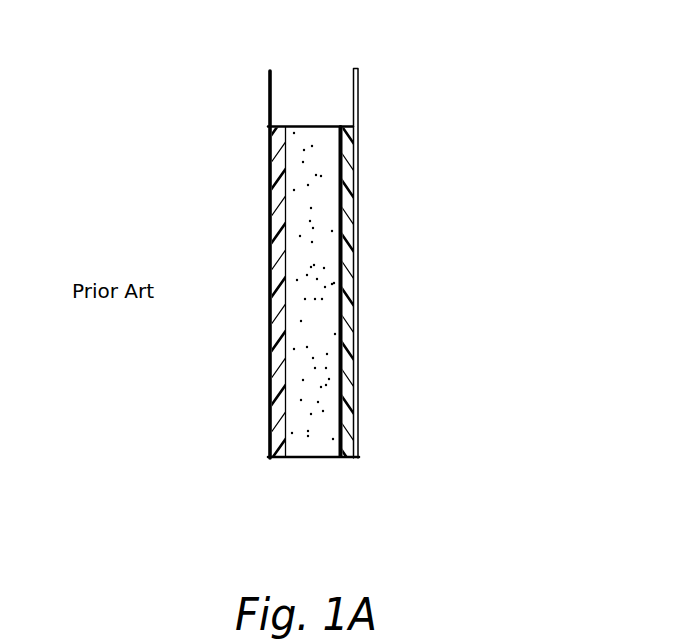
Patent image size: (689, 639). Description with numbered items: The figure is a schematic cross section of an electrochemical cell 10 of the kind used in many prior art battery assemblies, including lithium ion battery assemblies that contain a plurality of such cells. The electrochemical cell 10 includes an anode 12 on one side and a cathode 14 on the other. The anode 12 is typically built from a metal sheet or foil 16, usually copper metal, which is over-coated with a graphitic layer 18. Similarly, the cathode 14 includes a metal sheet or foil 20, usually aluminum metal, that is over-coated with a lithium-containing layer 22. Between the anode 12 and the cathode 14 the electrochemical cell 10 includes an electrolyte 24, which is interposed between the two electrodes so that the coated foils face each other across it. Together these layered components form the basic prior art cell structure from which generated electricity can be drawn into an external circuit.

The electrochemical cell 10 is at (440, 135).
The anode 12 is at (277, 342).
The cathode 14 is at (345, 308).
The metal sheet or foil 16 is at (269, 203).
The graphitic layer 18 is at (282, 423).
The metal sheet or foil 20 is at (357, 240).
The lithium-containing layer 22 is at (342, 425).
The electrolyte 24 is at (305, 170).